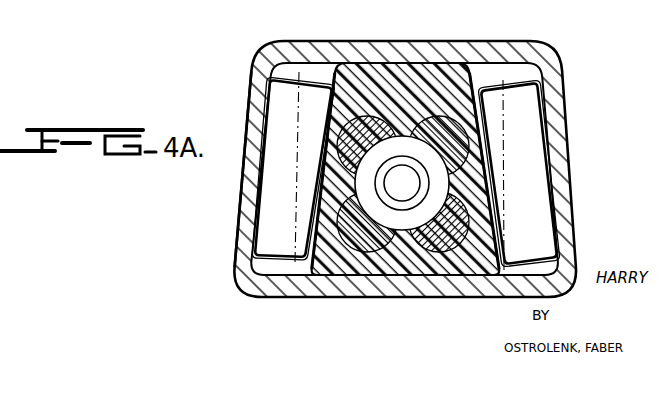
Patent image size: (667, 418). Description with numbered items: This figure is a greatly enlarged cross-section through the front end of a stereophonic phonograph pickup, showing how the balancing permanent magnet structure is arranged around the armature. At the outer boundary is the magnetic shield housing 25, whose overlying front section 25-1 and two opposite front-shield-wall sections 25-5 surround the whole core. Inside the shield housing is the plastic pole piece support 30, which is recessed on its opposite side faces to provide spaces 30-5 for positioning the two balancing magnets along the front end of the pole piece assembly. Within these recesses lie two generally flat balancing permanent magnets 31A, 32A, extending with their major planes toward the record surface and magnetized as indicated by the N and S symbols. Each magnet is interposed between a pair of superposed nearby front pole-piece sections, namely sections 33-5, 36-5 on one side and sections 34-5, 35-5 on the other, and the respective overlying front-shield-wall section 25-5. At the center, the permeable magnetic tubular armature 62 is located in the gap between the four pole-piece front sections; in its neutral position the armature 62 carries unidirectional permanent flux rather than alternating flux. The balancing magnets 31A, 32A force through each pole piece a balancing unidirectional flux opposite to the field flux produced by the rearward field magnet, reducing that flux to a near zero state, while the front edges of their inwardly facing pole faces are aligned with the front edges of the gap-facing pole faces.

The shield housing 25 is at (404, 27).
The shield-housing front section 25-1 is at (252, 78).
The front-shield-wall section 25-5 is at (243, 180).
The pole piece support 30 is at (405, 77).
The magnet pocket 30-5 is at (313, 78).
The balancing permanent magnet 31A is at (263, 218).
The balancing permanent magnet 32A is at (533, 203).
The front pole-piece section 33-5 is at (445, 120).
The front pole-piece section 34-5 is at (367, 128).
The front pole-piece section 35-5 is at (363, 242).
The front pole-piece section 36-5 is at (440, 240).
The armature 62 is at (402, 207).